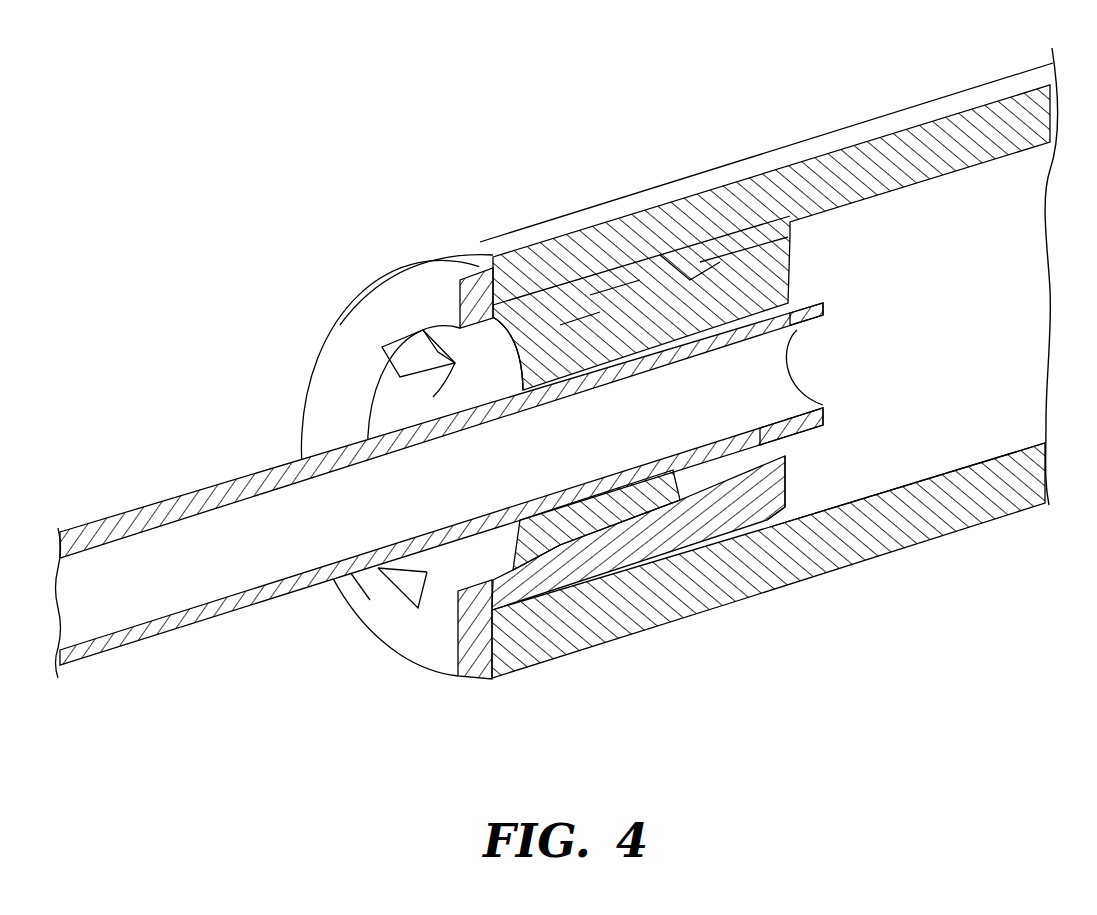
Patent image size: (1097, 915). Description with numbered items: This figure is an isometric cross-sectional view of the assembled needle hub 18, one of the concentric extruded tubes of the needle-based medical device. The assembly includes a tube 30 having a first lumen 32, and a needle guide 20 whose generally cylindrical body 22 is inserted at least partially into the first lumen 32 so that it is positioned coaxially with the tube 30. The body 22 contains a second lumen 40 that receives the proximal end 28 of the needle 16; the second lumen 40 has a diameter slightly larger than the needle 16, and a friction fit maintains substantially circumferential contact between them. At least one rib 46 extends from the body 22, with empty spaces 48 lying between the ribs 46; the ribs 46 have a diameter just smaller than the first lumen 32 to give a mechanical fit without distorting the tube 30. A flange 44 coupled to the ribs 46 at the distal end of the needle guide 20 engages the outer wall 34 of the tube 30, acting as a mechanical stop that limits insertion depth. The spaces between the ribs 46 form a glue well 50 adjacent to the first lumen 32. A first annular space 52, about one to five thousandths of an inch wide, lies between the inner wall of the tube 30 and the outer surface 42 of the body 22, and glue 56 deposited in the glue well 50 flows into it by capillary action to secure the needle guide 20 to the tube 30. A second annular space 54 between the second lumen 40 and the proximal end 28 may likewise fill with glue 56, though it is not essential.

The needle 16 is at (485, 484).
The needle hub 18 is at (722, 690).
The needle guide 20 is at (771, 216).
The body 22 is at (773, 268).
The proximal end 28 is at (823, 312).
The tube 30 is at (882, 118).
The first lumen 32 is at (970, 443).
The outer wall 34 is at (478, 262).
The second lumen 40 is at (513, 347).
The outer surface 42 is at (687, 262).
The flange 44 is at (426, 300).
The rib 46 is at (570, 577).
The empty spaces 48 is at (410, 583).
The glue well 50 is at (615, 310).
The first annular space 52 is at (750, 528).
The second annular space 54 is at (768, 443).
The glue 56 is at (578, 330).